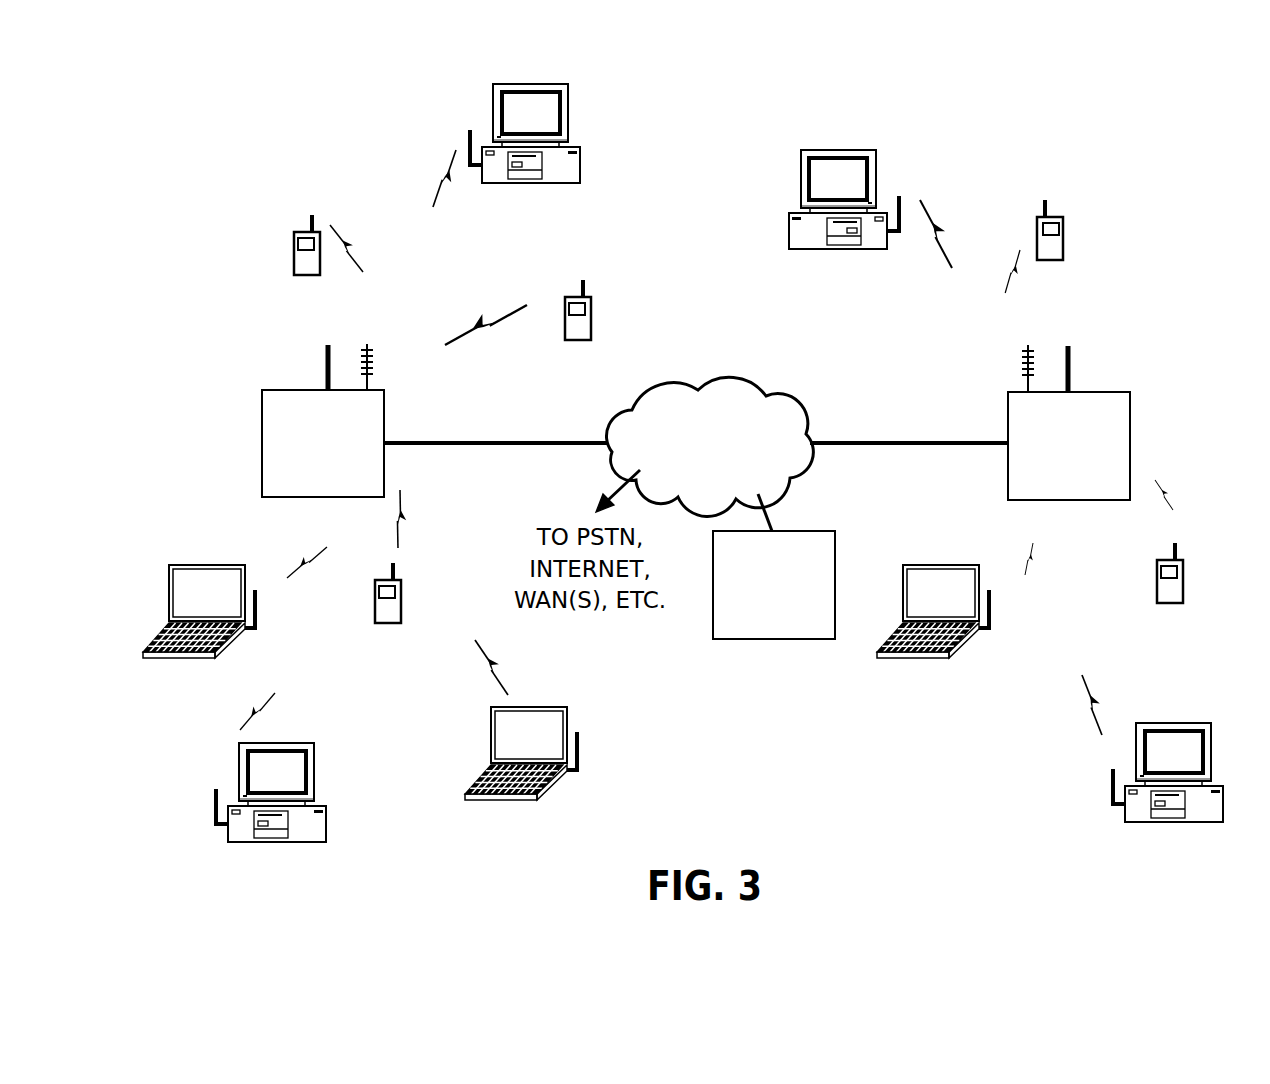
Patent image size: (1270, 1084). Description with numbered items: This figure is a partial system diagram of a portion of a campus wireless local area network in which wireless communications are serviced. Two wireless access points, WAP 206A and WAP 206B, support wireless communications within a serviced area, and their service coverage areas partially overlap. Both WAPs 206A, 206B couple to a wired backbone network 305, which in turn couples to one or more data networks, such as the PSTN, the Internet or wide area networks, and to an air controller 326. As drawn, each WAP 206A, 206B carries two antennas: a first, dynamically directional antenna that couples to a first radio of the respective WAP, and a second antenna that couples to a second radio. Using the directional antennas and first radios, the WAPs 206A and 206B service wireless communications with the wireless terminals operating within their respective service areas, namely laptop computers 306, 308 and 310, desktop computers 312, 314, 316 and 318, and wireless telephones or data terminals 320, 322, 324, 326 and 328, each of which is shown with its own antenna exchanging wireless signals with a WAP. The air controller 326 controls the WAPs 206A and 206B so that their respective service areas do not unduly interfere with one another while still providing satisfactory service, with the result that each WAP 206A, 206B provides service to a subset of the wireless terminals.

The wireless access point 206A is at (285, 390).
The wireless access point 206B is at (1103, 392).
The wired backbone network 305 is at (775, 400).
The laptop computer 306 is at (217, 565).
The laptop computer 308 is at (537, 706).
The laptop computer 310 is at (950, 564).
The desktop computer 312 is at (287, 743).
The desktop computer 314 is at (1162, 722).
The desktop computer 316 is at (538, 84).
The desktop computer 318 is at (850, 150).
The wireless telephone/data terminal 320 is at (403, 613).
The wireless telephone/data terminal 322 is at (292, 262).
The wireless telephone/data terminal 324 is at (592, 330).
The air controller 326 is at (804, 531).
The wireless telephone/data terminal 328 is at (1183, 590).